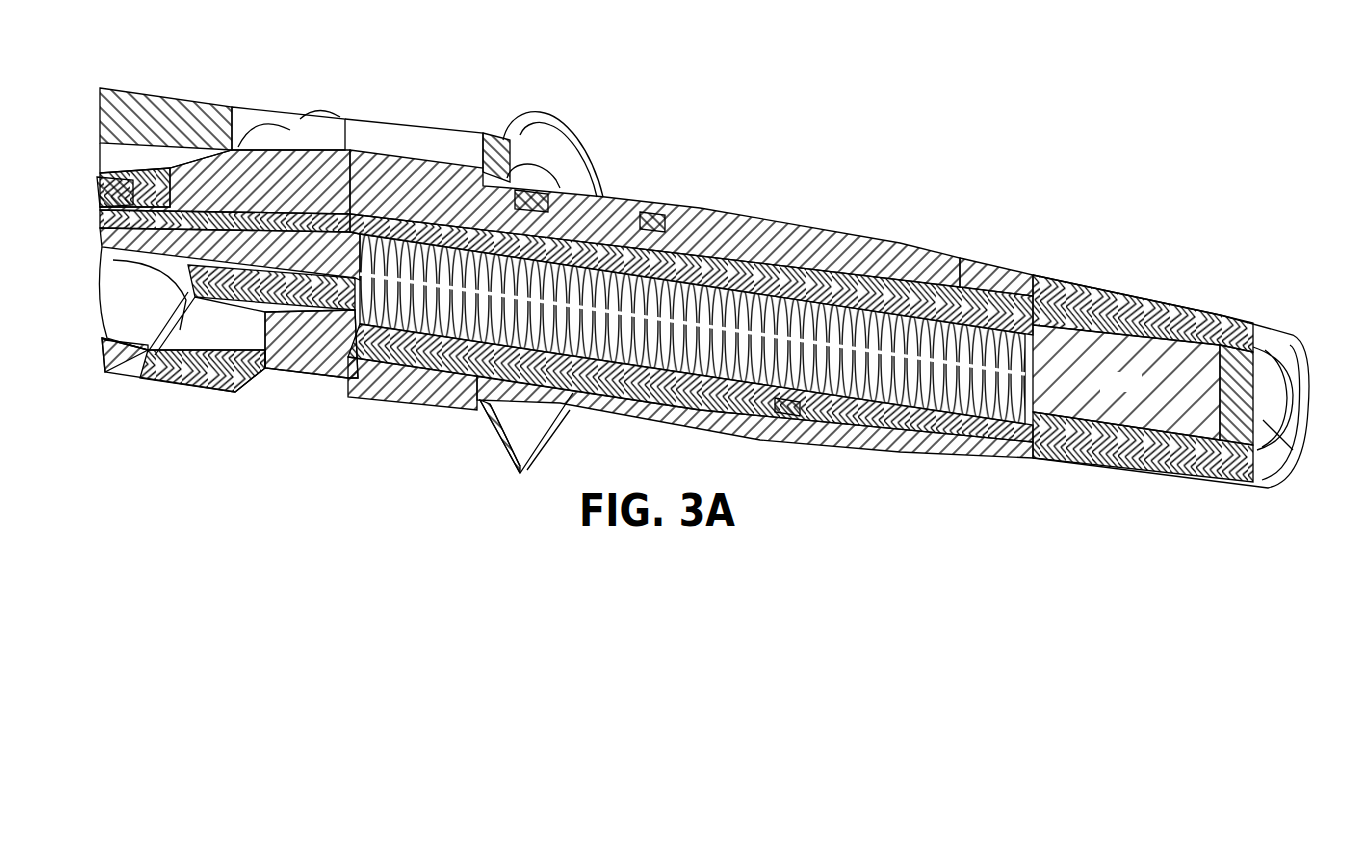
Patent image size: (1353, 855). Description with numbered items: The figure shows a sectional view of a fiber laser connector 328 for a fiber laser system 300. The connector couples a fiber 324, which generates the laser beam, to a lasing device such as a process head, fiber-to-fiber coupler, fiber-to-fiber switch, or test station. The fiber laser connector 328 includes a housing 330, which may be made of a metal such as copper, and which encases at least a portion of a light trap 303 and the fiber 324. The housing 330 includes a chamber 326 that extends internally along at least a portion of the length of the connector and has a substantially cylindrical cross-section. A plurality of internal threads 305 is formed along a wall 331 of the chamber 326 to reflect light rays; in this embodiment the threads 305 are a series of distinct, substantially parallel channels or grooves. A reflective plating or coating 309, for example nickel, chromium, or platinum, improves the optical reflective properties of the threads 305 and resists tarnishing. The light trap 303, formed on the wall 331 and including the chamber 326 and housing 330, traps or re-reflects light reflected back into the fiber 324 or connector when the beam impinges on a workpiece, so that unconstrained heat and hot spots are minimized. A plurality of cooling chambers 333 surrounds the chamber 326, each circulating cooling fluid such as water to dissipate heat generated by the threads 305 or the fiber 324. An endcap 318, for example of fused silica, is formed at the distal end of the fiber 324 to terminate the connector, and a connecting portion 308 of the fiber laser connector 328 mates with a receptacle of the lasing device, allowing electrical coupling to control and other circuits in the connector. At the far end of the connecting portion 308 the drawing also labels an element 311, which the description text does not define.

The fiber laser system 300 is at (778, 96).
The light trap 303 is at (768, 234).
The internal threads 305 is at (847, 410).
The connecting portion 308 is at (1150, 308).
The reflective plating or coating 309 is at (650, 427).
The end cap 311 is at (1293, 450).
The endcap 318 is at (1126, 382).
The fiber 324 is at (312, 288).
The chamber 326 is at (828, 250).
The fiber laser connector 328 is at (922, 240).
The housing 330 is at (430, 372).
The wall 331 is at (993, 272).
The cooling chambers 333 is at (652, 218).